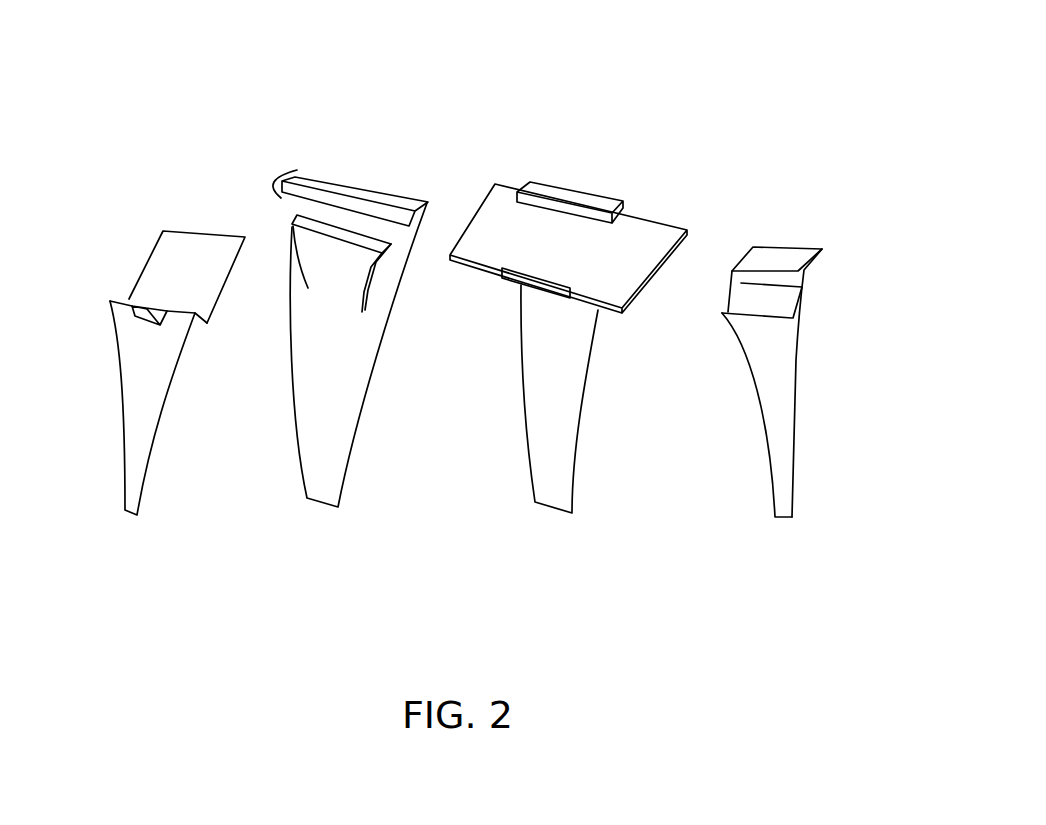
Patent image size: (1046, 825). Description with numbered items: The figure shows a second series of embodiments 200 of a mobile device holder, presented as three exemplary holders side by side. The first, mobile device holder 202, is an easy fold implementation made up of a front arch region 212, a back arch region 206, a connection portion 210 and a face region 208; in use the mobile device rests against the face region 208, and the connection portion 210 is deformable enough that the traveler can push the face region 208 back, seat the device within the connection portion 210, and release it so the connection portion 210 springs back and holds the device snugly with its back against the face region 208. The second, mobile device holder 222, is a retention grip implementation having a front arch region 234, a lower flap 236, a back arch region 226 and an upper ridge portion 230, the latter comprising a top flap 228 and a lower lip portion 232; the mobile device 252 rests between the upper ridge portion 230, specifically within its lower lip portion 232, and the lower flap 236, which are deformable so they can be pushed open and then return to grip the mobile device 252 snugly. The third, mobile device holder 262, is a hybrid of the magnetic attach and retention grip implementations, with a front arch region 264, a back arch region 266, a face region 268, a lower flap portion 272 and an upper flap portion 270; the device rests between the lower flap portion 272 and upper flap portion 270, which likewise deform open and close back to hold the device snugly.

The second series of embodiments 200 is at (460, 267).
The mobile device holder 202 is at (143, 351).
The back arch region 206 is at (160, 410).
The face region 208 is at (143, 258).
The connection portion 210 is at (145, 318).
The front arch region 212 is at (113, 313).
The mobile device holder 222 is at (473, 314).
The back arch region 226 is at (365, 373).
The top flap 228 is at (278, 180).
The upper ridge portion 230 is at (392, 193).
The lower lip portion 232 is at (400, 231).
The front arch region 234 is at (343, 268).
The lower flap 236 is at (292, 228).
The mobile device 252 is at (640, 230).
The mobile device holder 262 is at (800, 382).
The front arch region 264 is at (767, 367).
The back arch region 266 is at (797, 392).
The face region 268 is at (788, 302).
The upper flap portion 270 is at (807, 268).
The lower flap portion 272 is at (758, 317).